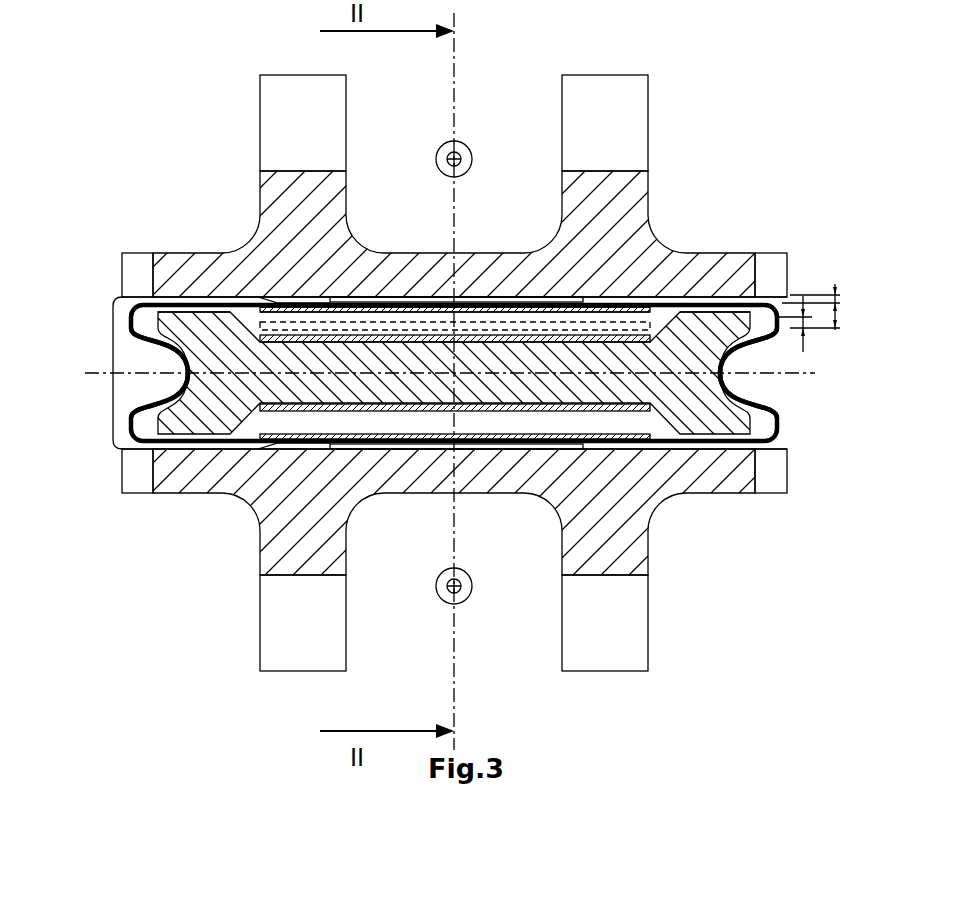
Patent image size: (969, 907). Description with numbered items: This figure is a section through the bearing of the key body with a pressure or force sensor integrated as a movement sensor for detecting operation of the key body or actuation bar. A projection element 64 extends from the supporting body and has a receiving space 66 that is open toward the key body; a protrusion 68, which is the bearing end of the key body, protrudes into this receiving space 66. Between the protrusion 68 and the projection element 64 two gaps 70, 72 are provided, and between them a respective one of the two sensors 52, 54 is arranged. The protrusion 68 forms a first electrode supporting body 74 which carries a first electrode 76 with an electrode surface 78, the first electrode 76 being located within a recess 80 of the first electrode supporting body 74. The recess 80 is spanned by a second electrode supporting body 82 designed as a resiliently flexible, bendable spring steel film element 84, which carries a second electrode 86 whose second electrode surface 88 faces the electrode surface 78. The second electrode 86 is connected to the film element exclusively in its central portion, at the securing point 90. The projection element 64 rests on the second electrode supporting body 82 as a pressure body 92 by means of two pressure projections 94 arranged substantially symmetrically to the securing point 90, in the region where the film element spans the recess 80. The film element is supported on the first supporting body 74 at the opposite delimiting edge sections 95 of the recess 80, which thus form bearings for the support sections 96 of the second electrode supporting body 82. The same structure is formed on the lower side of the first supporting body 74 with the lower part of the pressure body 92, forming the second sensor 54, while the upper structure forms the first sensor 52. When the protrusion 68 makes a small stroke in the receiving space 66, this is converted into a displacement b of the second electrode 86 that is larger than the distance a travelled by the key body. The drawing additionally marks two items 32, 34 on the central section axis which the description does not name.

The first axis symbol 32 is at (470, 132).
The second axis symbol 34 is at (436, 595).
The sensor 52 is at (673, 295).
The sensor 54 is at (262, 500).
The projection element 64 is at (655, 257).
The receiving space 66 is at (431, 378).
The protrusion 68 is at (680, 387).
The gap 70 is at (812, 294).
The gap 72 is at (770, 443).
The first electrode supporting body 74 is at (167, 381).
The first electrode 76 is at (258, 336).
The electrode surface 78 is at (378, 325).
The recess 80 is at (705, 303).
The second electrode supporting body 82 is at (228, 287).
The spring steel film element 84 is at (125, 318).
The second electrode 86 is at (488, 307).
The second electrode surface 88 is at (535, 312).
The securing point 90 is at (454, 302).
The pressure body 92 is at (238, 185).
The pressure projections 94 is at (313, 300).
The delimiting edge sections 95 is at (735, 362).
The support sections 96 is at (200, 322).